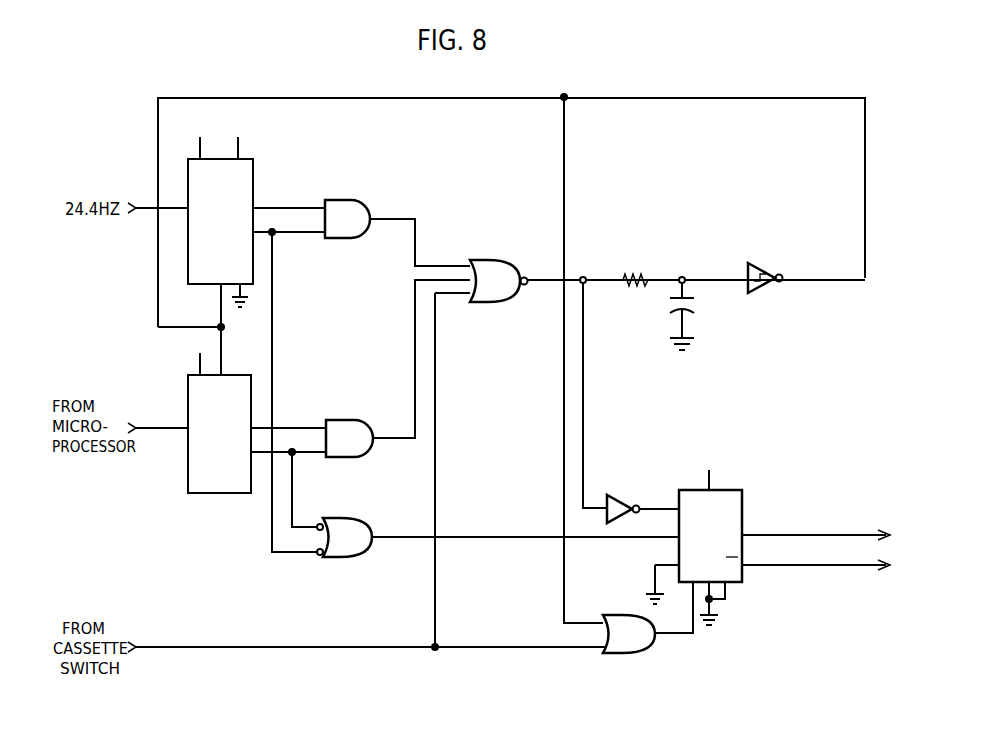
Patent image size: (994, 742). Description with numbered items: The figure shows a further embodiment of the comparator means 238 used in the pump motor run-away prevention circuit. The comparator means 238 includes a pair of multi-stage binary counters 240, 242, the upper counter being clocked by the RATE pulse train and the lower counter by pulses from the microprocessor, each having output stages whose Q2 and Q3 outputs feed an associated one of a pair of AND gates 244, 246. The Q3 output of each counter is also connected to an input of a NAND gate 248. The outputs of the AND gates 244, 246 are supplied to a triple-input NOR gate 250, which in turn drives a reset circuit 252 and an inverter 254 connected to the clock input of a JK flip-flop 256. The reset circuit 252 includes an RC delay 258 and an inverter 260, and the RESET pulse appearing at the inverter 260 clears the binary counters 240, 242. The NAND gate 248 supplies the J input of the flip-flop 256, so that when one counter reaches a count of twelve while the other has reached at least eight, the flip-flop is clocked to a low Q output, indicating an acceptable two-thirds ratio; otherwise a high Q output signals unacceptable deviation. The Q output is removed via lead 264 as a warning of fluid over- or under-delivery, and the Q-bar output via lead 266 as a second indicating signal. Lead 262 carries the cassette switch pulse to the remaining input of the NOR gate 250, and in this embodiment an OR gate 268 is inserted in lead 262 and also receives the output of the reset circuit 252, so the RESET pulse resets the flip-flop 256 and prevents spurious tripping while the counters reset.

The comparator means 238 is at (125, 131).
The multi-stage binary counter 240 is at (254, 197).
The multi-stage binary counter 242 is at (188, 482).
The AND gate 244 is at (352, 203).
The AND gate 246 is at (360, 459).
The NAND gate 248 is at (362, 522).
The triple-input NOR gate 250 is at (490, 260).
The reset circuit 252 is at (652, 256).
The inverter 254 is at (622, 495).
The JK flip-flop 256 is at (742, 490).
The RC delay 258 is at (664, 304).
The inverter 260 is at (748, 294).
The lead 262 is at (257, 646).
The lead 264 is at (805, 531).
The lead 266 is at (799, 568).
The OR gate 268 is at (631, 653).